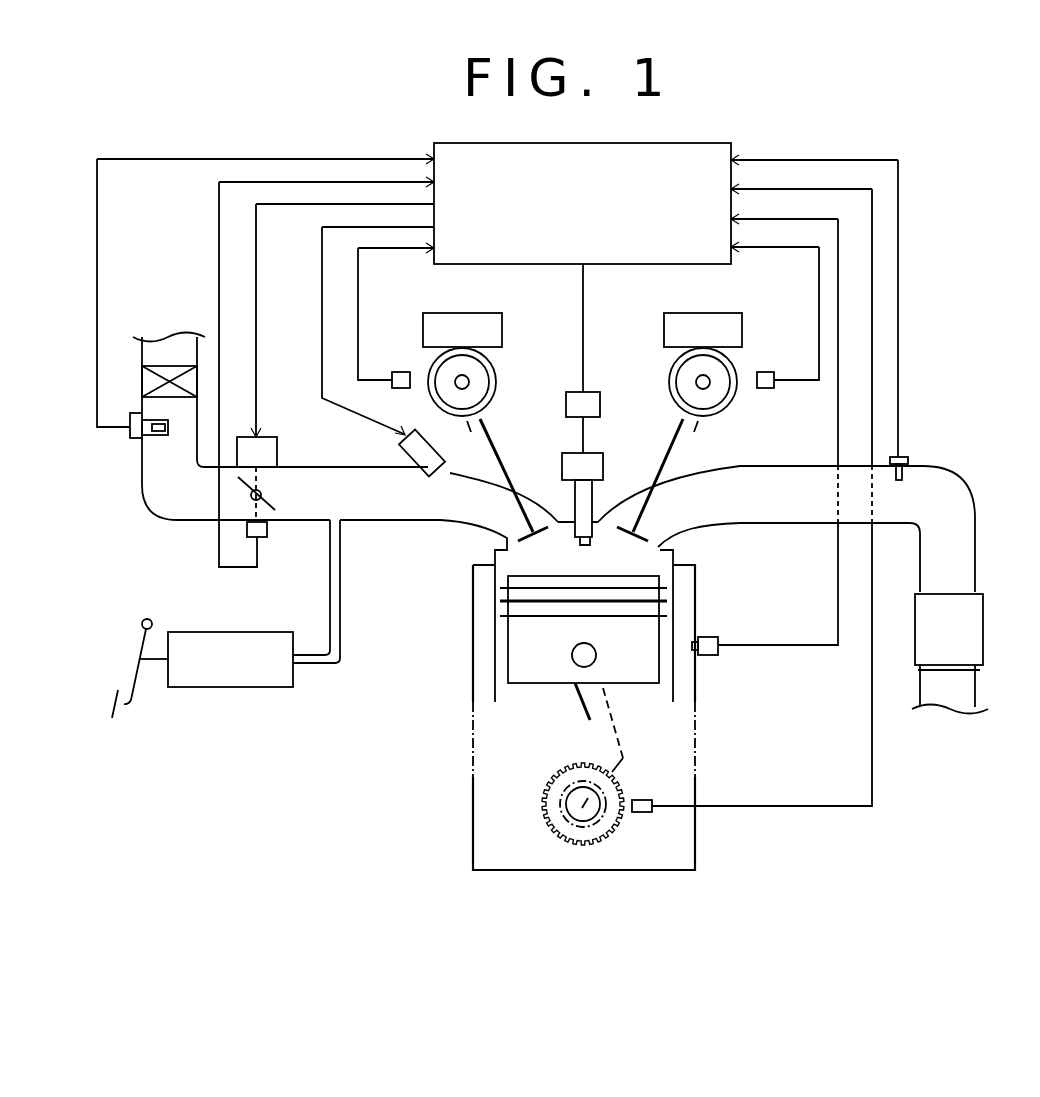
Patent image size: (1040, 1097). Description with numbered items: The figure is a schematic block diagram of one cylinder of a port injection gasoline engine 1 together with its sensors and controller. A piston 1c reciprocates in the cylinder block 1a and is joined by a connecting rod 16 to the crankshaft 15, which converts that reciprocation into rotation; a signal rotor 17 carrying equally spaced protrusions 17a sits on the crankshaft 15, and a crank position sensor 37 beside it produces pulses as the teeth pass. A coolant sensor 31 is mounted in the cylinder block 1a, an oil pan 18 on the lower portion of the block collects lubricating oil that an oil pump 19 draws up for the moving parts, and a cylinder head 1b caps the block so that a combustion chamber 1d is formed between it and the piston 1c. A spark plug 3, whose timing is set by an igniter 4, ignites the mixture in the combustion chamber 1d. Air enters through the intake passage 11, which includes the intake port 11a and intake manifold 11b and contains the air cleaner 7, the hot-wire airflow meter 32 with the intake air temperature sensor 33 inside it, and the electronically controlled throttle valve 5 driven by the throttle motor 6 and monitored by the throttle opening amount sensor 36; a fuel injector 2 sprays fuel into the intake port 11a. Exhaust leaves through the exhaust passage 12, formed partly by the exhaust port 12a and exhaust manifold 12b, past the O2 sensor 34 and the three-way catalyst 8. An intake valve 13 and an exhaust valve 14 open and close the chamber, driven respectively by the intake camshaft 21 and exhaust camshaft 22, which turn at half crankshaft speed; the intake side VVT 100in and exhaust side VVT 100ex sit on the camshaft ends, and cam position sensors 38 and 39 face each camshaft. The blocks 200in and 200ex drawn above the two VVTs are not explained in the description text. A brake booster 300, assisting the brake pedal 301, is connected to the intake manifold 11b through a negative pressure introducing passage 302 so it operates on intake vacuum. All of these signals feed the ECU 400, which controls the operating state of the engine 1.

The engine 1 is at (460, 648).
The cylinder block 1a is at (696, 685).
The cylinder head 1b is at (603, 518).
The piston 1c is at (515, 668).
The combustion chamber 1d is at (530, 565).
The fuel injector 2 is at (400, 443).
The spark plug 3 is at (562, 452).
The igniter 4 is at (600, 405).
The throttle valve 5 is at (263, 490).
The throttle motor 6 is at (262, 437).
The air cleaner 7 is at (168, 372).
The three-way catalyst 8 is at (983, 624).
The intake passage 11 is at (200, 521).
The intake port 11a is at (502, 534).
The intake manifold 11b is at (353, 530).
The exhaust passage 12 is at (895, 514).
The exhaust port 12a is at (665, 530).
The exhaust manifold 12b is at (806, 528).
The intake valve 13 is at (510, 493).
The exhaust valve 14 is at (666, 490).
The crankshaft 15 is at (567, 803).
The connecting rod 16 is at (620, 700).
The signal rotor 17 is at (556, 781).
The protrusions 17a is at (607, 837).
The oil pan 18 is at (473, 853).
The oil pump 19 is at (603, 818).
The intake camshaft 21 is at (470, 386).
The exhaust camshaft 22 is at (710, 386).
The coolant sensor 31 is at (712, 636).
The hot-wire airflow meter 32 is at (136, 439).
The intake air temperature sensor 33 is at (162, 440).
The O2 sensor 34 is at (905, 457).
The throttle opening amount sensor 36 is at (261, 539).
The crank position sensor 37 is at (642, 800).
The cam position sensor 38 is at (400, 372).
The cam position sensor 39 is at (766, 372).
The intake side VVT 100in is at (509, 386).
The exhaust side VVT 100ex is at (664, 379).
The intake oil control valve 200in is at (472, 312).
The exhaust oil control valve 200ex is at (703, 312).
The brake booster 300 is at (232, 688).
The brake pedal 301 is at (143, 646).
The negative pressure introducing passage 302 is at (343, 620).
The electronic control unit 400 is at (683, 143).